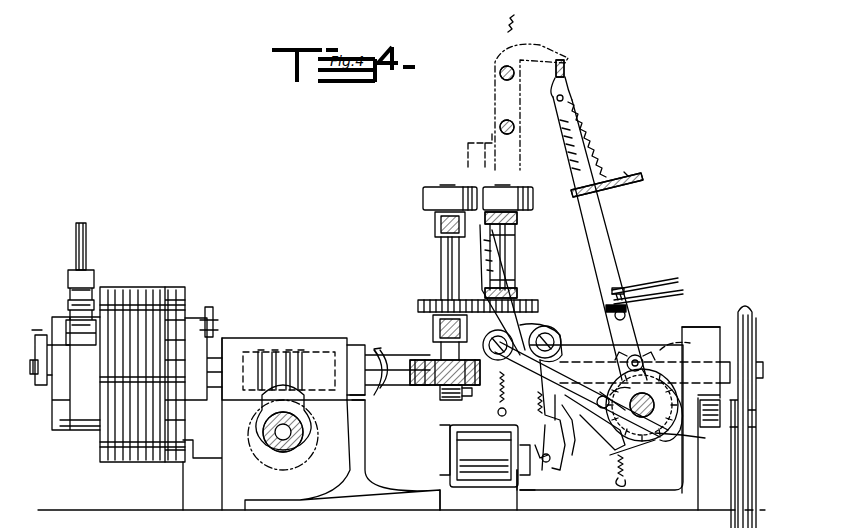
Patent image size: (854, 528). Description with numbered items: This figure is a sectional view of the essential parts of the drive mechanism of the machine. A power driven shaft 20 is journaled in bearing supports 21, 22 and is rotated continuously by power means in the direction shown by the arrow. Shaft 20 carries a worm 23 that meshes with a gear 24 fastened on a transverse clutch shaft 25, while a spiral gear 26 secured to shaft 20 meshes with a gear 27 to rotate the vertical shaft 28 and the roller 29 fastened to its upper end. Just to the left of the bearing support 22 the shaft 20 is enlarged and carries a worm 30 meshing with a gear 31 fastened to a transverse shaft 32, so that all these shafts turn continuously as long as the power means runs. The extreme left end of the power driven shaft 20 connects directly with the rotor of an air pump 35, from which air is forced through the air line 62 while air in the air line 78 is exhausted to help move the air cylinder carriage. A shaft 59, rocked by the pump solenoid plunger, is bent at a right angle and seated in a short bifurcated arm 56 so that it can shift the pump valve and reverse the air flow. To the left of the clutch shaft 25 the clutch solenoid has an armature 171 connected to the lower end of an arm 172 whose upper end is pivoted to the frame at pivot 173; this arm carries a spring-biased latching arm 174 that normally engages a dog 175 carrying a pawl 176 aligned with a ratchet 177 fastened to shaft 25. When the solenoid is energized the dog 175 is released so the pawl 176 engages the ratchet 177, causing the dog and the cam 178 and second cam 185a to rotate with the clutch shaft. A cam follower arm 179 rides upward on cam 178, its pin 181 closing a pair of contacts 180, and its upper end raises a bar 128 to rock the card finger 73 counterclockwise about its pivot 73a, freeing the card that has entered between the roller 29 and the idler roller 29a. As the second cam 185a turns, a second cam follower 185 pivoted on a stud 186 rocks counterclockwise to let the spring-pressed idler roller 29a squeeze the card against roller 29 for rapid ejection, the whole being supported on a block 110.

The air line 78 is at (87, 228).
The air line 62 is at (86, 244).
The air pump 35 is at (168, 278).
The shaft 59 is at (42, 328).
The bifurcated arm 56 is at (38, 360).
The worm 30 is at (265, 346).
The gear 31 is at (260, 417).
The transverse shaft 32 is at (275, 448).
The power driven shaft 20 is at (377, 351).
The bearing support 22 is at (358, 403).
The gear 27 is at (420, 356).
The spiral gear 26 is at (440, 395).
The roller 29 is at (437, 180).
The idler roller 29a is at (517, 180).
The vertical shaft 28 is at (441, 250).
The second cam follower 185 is at (515, 248).
The stud 186 is at (486, 300).
The pivot 173 is at (545, 330).
The pivot 73a is at (496, 65).
The card finger 73 is at (476, 143).
The bar 128 is at (566, 64).
The cam follower arm 179 is at (599, 228).
The contacts 180 is at (632, 286).
The pin 181 is at (627, 314).
The bearing support 21 is at (696, 323).
The worm 23 is at (684, 343).
The ratchet 177 is at (624, 361).
The pawl 176 is at (605, 400).
The cam 178 is at (698, 435).
The clutch shaft 25 is at (671, 414).
The gear 24 is at (658, 443).
The second cam 185a is at (580, 430).
The dog 175 is at (572, 452).
The latching arm 174 is at (548, 464).
The arm 172 is at (535, 490).
The armature 171 is at (517, 492).
The block 110 is at (485, 456).